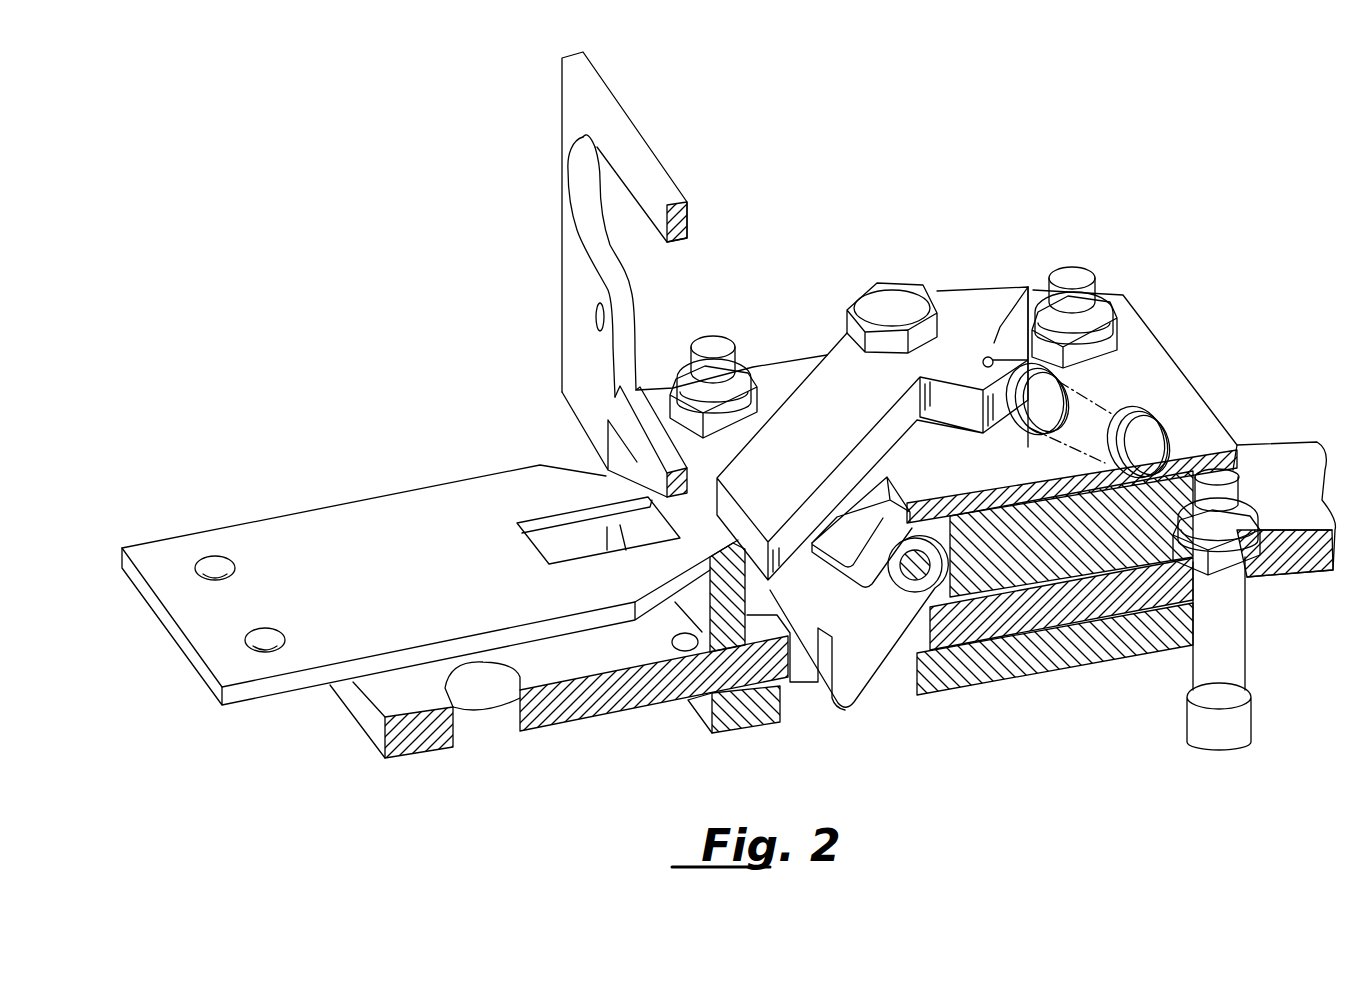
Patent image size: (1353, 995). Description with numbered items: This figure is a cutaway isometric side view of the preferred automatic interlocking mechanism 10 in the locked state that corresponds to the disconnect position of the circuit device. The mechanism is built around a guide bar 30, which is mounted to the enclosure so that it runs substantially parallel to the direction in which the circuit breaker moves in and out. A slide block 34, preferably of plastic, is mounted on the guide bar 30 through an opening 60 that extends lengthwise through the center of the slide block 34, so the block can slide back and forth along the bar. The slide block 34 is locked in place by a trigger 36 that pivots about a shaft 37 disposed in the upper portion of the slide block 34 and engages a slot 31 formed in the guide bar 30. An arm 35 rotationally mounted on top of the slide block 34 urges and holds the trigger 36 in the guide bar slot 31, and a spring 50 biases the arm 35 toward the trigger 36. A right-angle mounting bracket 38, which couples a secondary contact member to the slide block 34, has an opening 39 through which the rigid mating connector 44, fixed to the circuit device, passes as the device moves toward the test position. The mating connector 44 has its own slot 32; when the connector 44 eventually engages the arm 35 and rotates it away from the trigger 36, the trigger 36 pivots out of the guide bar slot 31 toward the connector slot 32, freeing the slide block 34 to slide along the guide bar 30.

The automatic interlocking mechanism 10 is at (395, 152).
The guide bar 30 is at (611, 690).
The slot 31 is at (805, 662).
The slot 32 is at (571, 545).
The slide block 34 is at (1088, 648).
The arm 35 is at (988, 297).
The trigger 36 is at (874, 622).
The shaft 37 is at (927, 580).
The right-angle mounting bracket 38 is at (598, 78).
The opening 39 is at (622, 460).
The mating connector 44 is at (430, 572).
The spring 50 is at (1152, 420).
The opening 60 is at (760, 652).